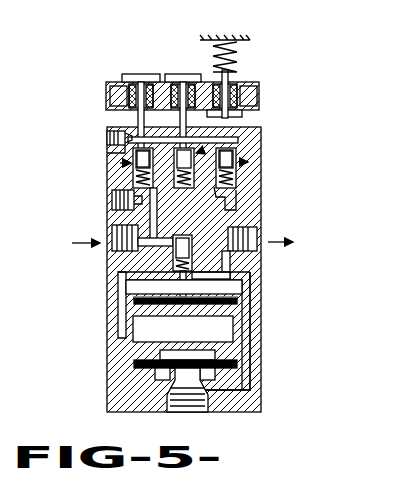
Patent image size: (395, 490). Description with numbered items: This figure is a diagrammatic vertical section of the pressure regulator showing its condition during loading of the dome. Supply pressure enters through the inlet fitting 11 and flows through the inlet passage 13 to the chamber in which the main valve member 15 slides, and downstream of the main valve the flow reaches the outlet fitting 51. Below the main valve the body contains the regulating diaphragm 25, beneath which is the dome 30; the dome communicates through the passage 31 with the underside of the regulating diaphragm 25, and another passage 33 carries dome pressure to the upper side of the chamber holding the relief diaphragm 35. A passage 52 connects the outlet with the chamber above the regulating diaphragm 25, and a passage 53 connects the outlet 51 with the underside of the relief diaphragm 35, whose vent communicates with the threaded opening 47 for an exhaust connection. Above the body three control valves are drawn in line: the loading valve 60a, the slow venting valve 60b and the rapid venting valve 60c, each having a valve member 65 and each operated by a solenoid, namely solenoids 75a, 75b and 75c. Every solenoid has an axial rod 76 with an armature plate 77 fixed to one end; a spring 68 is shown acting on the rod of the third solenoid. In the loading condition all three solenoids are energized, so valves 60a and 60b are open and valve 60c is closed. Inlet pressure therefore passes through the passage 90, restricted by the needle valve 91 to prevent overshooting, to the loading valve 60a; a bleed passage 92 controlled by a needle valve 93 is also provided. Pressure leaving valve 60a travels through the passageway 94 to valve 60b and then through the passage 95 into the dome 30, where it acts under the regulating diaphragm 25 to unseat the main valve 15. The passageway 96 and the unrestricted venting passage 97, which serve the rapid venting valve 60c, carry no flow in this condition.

The inlet fitting 11 is at (112, 250).
The inlet passage 13 is at (138, 268).
The main valve member 15 is at (261, 212).
The regulating diaphragm 25 is at (240, 302).
The dome 30 is at (232, 338).
The passage 31 is at (185, 316).
The passage 33 is at (185, 342).
The relief diaphragm 35 is at (240, 364).
The threaded opening 47 is at (190, 412).
The outlet fitting 51 is at (261, 242).
The passage 52 is at (248, 292).
The passage 53 is at (261, 347).
The loading valve 60a is at (133, 180).
The slow venting valve 60b is at (242, 122).
The rapid venting valve 60c is at (238, 165).
The valve member 65 is at (133, 162).
The spring 68 is at (238, 60).
The solenoid 75a is at (135, 95).
The solenoid 75b is at (178, 82).
The solenoid 75c is at (250, 92).
The axial rod 76 is at (130, 86).
The armature plate 77 is at (140, 82).
The passage 90 is at (148, 220).
The needle valve 91 is at (112, 200).
The bleed passage 92 is at (107, 140).
The needle valve 93 is at (110, 128).
The passageway 94 is at (172, 128).
The passage 95 is at (118, 304).
The passageway 96 is at (238, 200).
The venting passage 97 is at (250, 136).